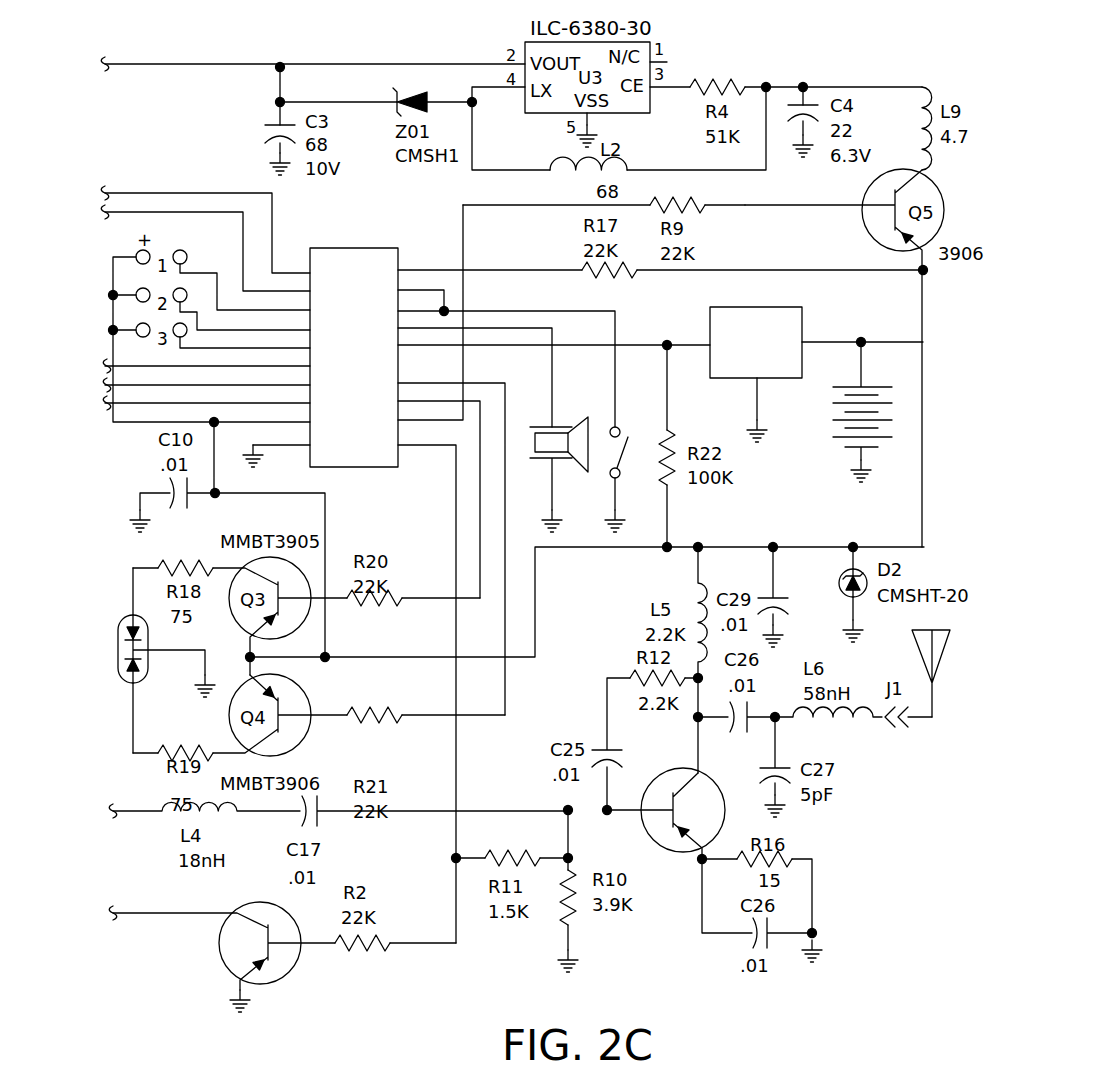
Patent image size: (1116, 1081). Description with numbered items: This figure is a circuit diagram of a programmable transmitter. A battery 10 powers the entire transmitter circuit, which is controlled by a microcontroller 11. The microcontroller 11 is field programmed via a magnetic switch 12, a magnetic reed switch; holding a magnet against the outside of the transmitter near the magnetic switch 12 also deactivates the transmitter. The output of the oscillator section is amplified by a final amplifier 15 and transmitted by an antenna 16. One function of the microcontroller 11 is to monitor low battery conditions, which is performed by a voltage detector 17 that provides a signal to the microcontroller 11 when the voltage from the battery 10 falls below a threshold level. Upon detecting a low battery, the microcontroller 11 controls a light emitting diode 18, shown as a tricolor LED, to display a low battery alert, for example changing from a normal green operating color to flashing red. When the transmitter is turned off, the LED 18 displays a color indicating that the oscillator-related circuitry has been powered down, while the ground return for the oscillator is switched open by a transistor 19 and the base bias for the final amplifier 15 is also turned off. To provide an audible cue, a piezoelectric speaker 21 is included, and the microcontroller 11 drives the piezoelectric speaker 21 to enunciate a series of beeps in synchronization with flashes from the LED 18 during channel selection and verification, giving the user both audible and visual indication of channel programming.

The battery 10 is at (908, 405).
The microcontroller 11 is at (376, 266).
The magnetic switch 12 is at (635, 485).
The final amplifier 15 is at (670, 868).
The antenna 16 is at (950, 680).
The voltage detector 17 is at (812, 302).
The light emitting diode 18 is at (105, 630).
The transistor 19 is at (195, 944).
The piezoelectric speaker 21 is at (567, 485).